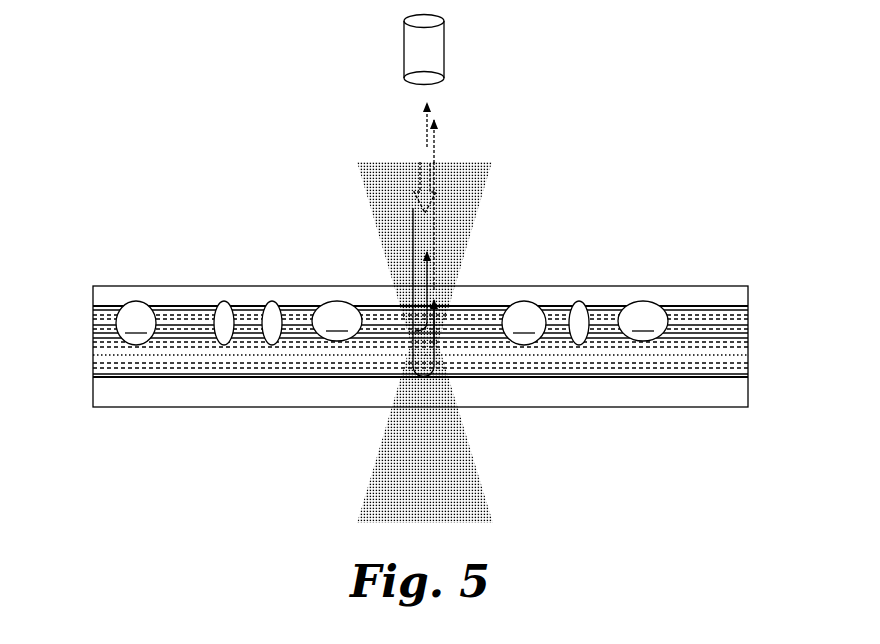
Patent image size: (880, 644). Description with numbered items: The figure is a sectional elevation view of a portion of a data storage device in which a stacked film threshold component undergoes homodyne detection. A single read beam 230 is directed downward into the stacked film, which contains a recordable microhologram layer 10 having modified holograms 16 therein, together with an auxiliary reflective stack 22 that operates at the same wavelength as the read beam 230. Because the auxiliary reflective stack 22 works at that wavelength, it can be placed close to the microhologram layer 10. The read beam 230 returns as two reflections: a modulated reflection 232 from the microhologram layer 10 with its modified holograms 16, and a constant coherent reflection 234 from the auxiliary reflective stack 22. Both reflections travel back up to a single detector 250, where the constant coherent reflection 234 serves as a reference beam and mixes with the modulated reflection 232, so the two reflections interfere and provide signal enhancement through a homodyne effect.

The microhologram layer 10 is at (89, 323).
The auxiliary reflective stack 22 is at (89, 362).
The modified holograms 16 is at (272, 308).
The read beam 230 is at (421, 165).
The modulated reflection 232 is at (433, 260).
The constant coherent reflection 234 is at (437, 301).
The detector 250 is at (453, 70).